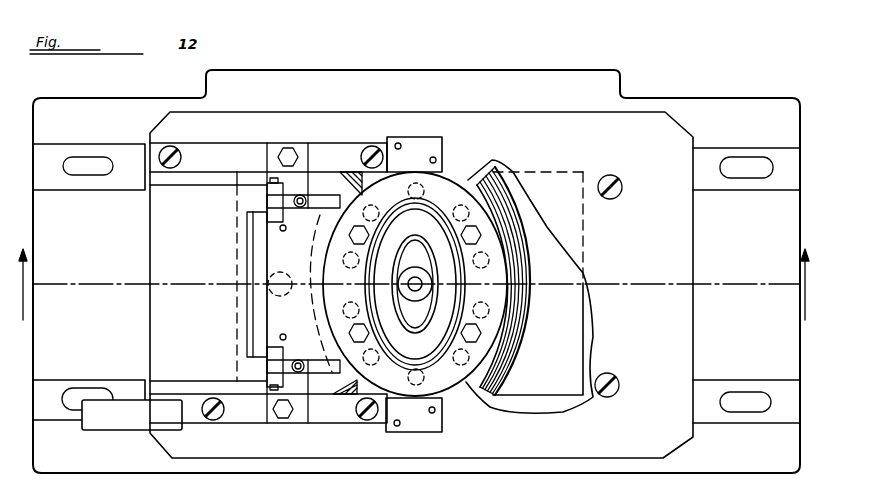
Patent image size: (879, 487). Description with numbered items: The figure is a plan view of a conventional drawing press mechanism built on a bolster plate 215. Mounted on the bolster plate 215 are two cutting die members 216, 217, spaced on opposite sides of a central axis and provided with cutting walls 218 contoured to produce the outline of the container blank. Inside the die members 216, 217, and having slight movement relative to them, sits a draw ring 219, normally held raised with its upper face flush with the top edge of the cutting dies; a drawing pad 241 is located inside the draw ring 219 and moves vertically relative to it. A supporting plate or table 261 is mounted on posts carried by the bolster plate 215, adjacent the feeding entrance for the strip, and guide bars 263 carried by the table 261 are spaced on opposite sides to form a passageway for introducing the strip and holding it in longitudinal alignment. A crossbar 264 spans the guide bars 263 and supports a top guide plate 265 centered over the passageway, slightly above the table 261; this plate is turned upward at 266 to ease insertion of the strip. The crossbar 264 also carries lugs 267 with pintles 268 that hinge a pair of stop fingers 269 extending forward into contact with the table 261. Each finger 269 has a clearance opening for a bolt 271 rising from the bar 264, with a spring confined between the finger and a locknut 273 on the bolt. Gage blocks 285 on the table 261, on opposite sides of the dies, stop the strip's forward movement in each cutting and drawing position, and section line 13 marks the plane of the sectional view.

The section line 13- 13 is at (416, 274).
The bolster plate 215 is at (416, 271).
The cutting die member 216 is at (529, 286).
The cutting die member 217 is at (348, 396).
The cutting walls 218 is at (328, 310).
The draw ring 219 is at (460, 179).
The drawing pad 241 is at (420, 230).
The supporting plate or table 261 is at (160, 213).
The guide bars 263 is at (200, 152).
The crossbar 264 is at (274, 146).
The top guide plate 265 is at (252, 303).
The upturned portion 266 is at (252, 320).
The lugs 267 is at (270, 182).
The pintles 268 is at (273, 222).
The stop fingers 269 is at (338, 200).
The bolt 271 is at (300, 210).
The locknut 273 is at (287, 195).
The gage blocks 285 is at (414, 142).